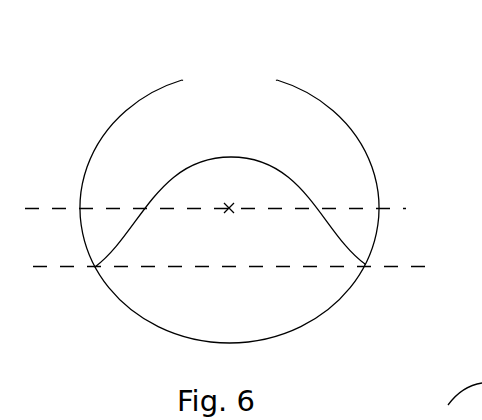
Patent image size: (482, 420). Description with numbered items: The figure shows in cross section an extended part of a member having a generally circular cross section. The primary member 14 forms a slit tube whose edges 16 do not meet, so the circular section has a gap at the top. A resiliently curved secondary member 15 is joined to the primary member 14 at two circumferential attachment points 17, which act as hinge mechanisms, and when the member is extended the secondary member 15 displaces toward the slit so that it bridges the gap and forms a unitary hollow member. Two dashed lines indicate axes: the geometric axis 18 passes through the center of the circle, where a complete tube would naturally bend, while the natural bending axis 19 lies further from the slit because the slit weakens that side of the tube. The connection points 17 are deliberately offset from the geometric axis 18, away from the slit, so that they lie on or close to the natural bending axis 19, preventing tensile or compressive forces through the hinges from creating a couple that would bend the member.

The primary member 14 is at (329, 107).
The secondary member 15 is at (303, 187).
The edges of the primary member 16 is at (182, 80).
The attachment points 17 is at (95, 268).
The geometric axis 18 is at (236, 208).
The natural bending axis 19 is at (253, 265).